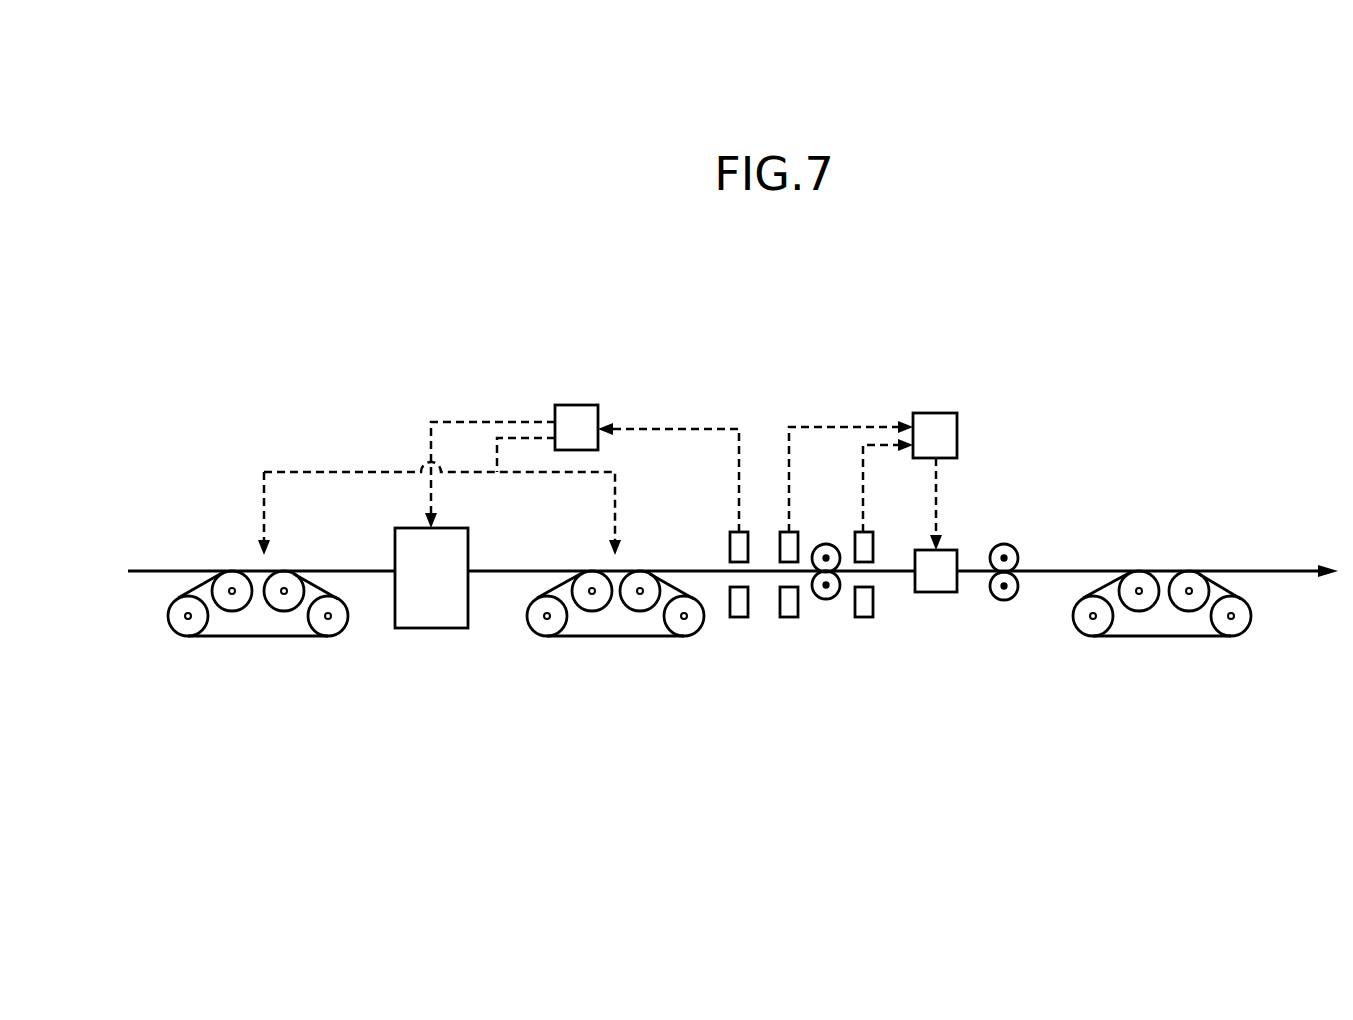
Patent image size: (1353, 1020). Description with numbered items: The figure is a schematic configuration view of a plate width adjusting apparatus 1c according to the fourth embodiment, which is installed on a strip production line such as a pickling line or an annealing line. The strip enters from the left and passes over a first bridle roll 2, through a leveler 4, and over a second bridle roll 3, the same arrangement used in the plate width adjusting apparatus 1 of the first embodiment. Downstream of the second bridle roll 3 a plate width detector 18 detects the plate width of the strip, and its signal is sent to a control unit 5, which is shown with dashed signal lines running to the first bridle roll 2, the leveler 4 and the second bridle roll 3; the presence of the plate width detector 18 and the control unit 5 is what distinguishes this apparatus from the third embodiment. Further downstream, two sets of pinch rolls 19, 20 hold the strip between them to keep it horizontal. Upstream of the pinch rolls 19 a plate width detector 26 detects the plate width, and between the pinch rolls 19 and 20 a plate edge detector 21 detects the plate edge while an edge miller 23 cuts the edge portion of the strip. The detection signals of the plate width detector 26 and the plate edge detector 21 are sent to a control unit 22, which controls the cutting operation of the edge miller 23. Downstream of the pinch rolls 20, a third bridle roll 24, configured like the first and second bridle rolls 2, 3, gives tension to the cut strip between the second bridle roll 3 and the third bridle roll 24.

The plate width adjusting apparatus 1c is at (324, 326).
The plate width adjusting apparatus 1 is at (128, 617).
The first bridle roll 2 is at (267, 636).
The second bridle roll 3 is at (628, 636).
The leveler 4 is at (433, 628).
The control unit 5 is at (575, 405).
The plate width detector 18 is at (730, 545).
The plate width detector 26 is at (788, 617).
The pinch rolls 19 is at (826, 599).
The plate edge detector 21 is at (863, 617).
The control unit 22 is at (933, 413).
The edge miller 23 is at (937, 592).
The pinch rolls 20 is at (1004, 544).
The third bridle roll 24 is at (1163, 562).